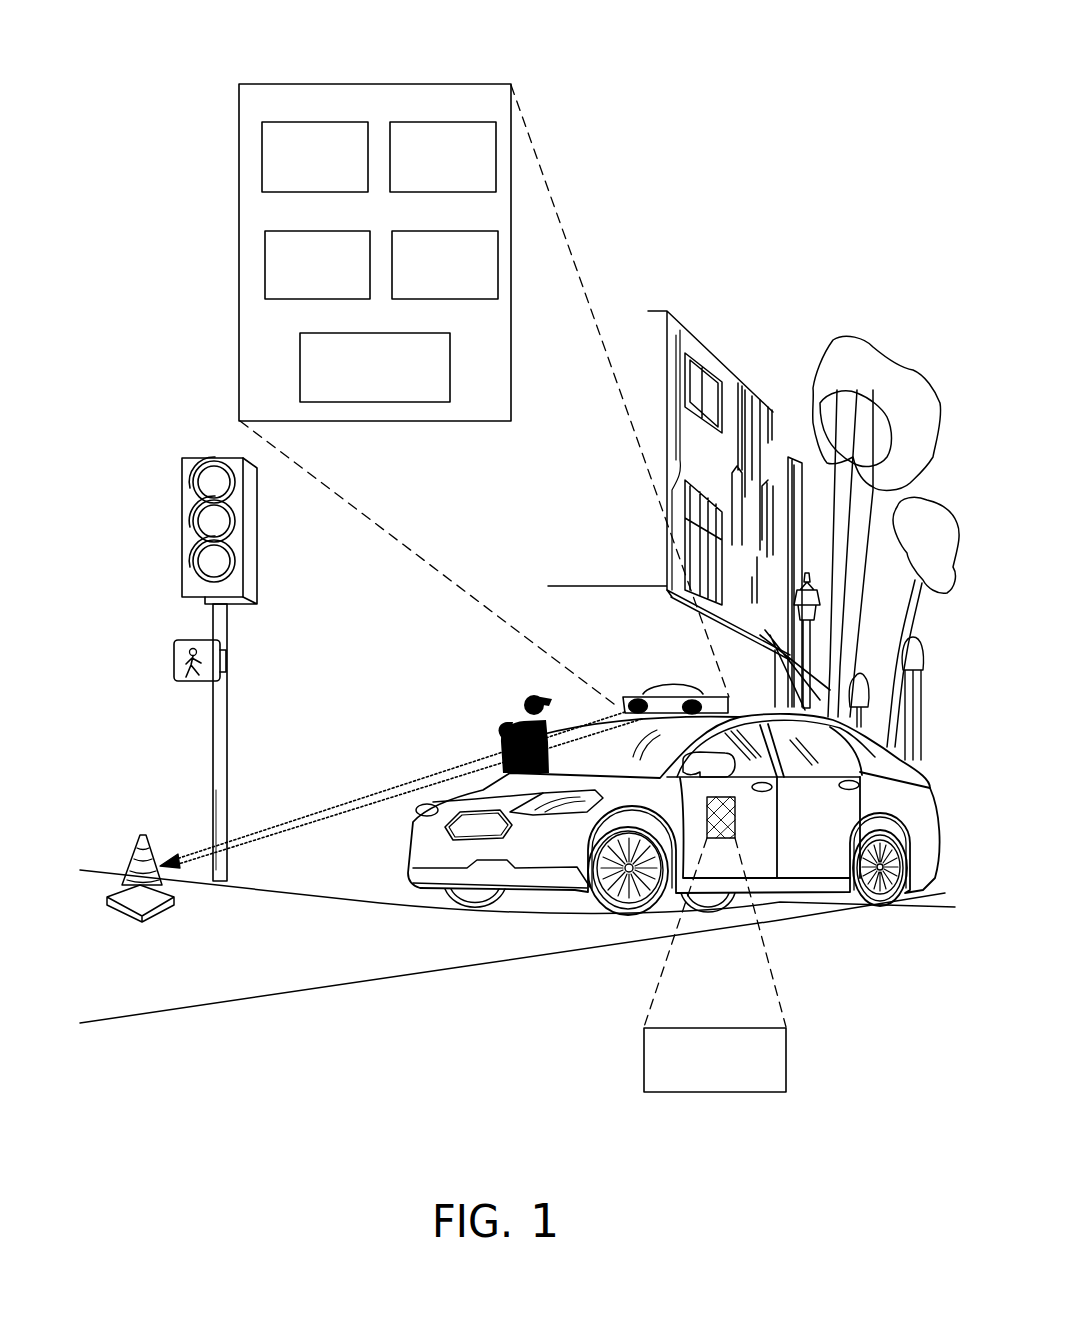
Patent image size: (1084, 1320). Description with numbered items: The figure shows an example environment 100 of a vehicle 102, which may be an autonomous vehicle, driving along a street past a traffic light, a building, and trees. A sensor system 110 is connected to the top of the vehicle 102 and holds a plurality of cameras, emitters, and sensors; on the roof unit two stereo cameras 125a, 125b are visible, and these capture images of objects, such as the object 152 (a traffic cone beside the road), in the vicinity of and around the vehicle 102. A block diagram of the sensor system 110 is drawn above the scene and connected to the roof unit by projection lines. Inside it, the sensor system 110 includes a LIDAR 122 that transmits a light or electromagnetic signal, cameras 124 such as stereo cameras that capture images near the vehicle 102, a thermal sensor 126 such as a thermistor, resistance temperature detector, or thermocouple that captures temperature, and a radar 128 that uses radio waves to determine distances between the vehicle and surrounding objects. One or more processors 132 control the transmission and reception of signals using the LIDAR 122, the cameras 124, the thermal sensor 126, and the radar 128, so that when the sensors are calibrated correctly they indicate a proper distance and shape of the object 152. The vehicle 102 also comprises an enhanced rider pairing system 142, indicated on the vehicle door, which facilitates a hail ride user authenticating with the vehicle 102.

The environment 100 is at (858, 20).
The vehicle 102 is at (412, 842).
The sensor system 110 is at (463, 84).
The LIDAR 122 is at (448, 122).
The cameras 124 is at (297, 122).
The stereo camera 125a is at (640, 702).
The stereo camera 125b is at (706, 701).
The thermal sensor 126 is at (313, 231).
The radar 128 is at (450, 231).
The processors 132 is at (387, 333).
The enhanced rider pairing system 142 is at (644, 1068).
The object 152 is at (128, 913).